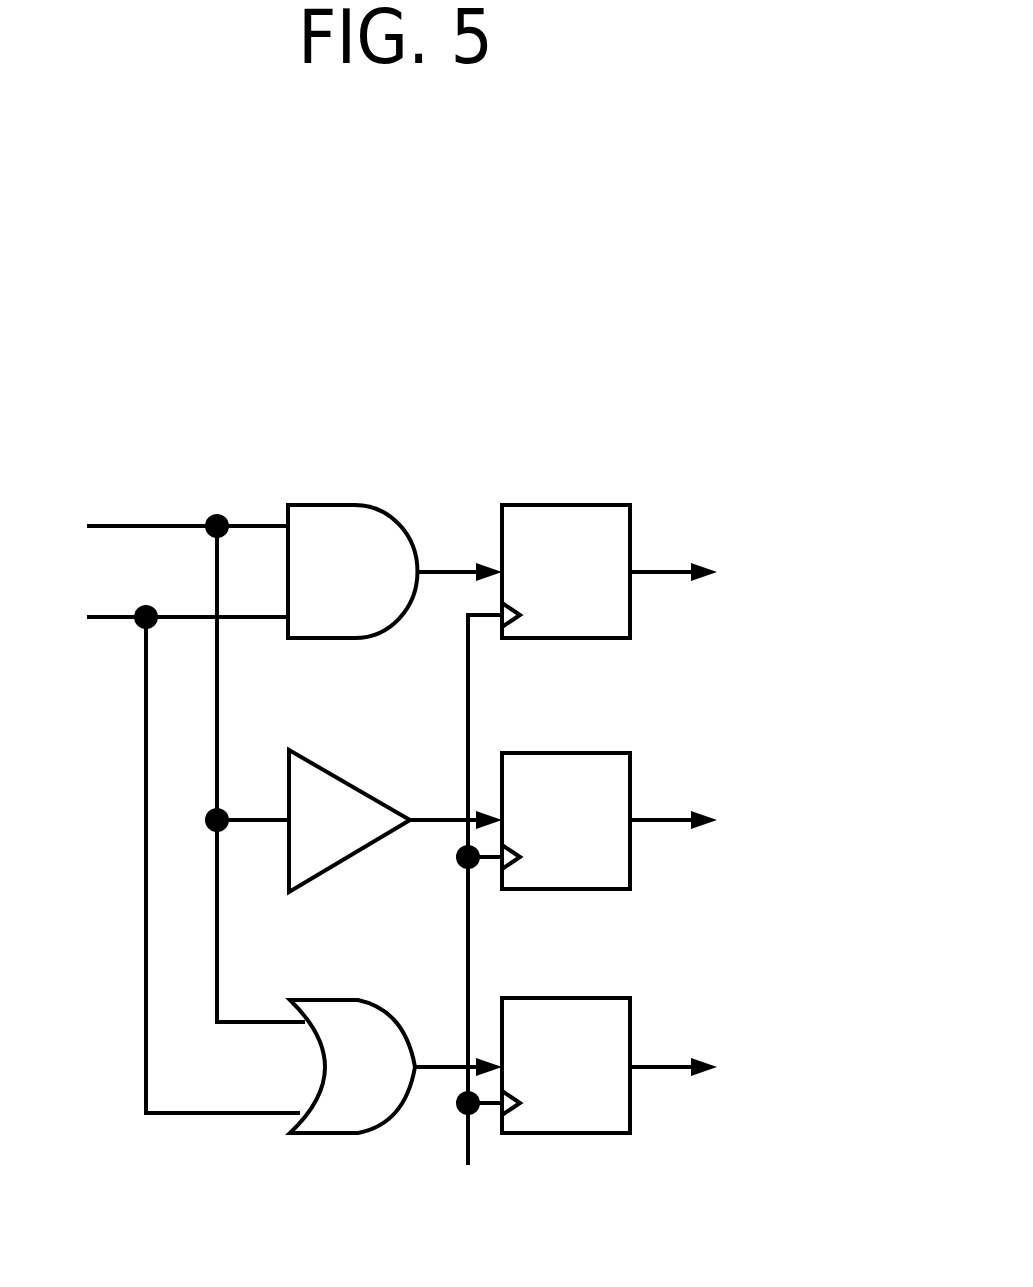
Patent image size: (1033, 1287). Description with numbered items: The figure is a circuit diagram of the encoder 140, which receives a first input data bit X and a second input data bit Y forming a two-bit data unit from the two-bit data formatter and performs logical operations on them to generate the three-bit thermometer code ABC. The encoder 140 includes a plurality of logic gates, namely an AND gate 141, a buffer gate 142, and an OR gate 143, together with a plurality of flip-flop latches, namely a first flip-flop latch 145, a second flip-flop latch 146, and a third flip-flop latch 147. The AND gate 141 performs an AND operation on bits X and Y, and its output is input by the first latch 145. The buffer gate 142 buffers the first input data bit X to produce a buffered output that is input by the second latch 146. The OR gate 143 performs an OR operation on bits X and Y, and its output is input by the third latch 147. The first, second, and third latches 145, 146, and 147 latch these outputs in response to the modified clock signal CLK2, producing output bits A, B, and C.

The encoder 140 is at (760, 348).
The AND gate 141 is at (328, 503).
The buffer gate 142 is at (343, 778).
The OR gate 143 is at (352, 999).
The first flip-flop latch 145 is at (597, 503).
The second flip-flop latch 146 is at (597, 751).
The third flip-flop latch 147 is at (595, 996).